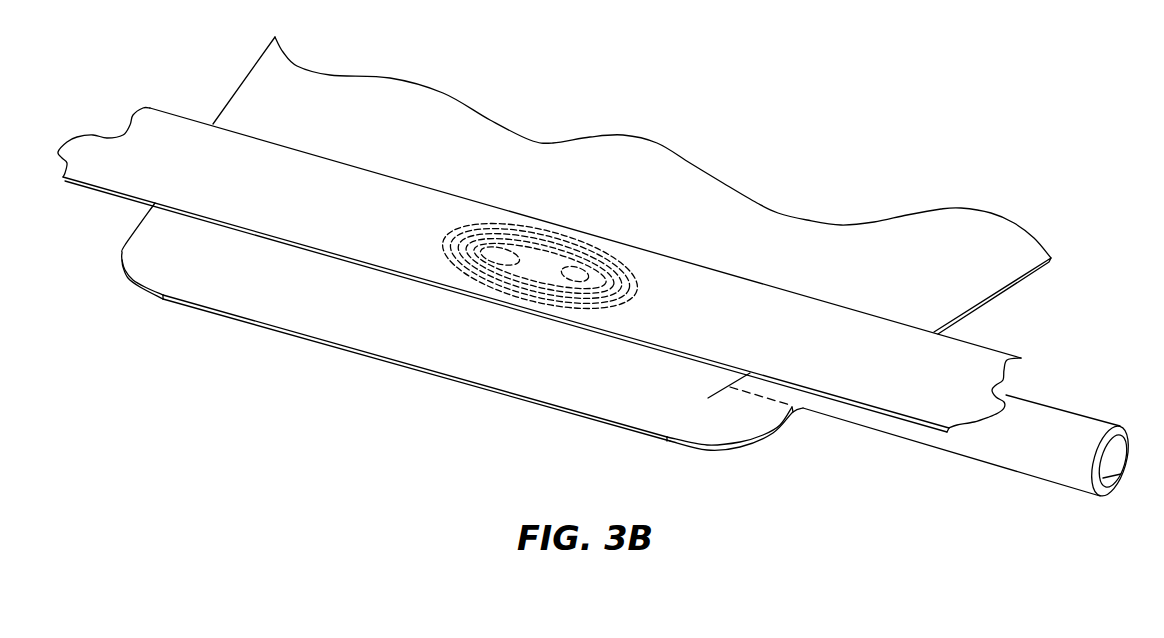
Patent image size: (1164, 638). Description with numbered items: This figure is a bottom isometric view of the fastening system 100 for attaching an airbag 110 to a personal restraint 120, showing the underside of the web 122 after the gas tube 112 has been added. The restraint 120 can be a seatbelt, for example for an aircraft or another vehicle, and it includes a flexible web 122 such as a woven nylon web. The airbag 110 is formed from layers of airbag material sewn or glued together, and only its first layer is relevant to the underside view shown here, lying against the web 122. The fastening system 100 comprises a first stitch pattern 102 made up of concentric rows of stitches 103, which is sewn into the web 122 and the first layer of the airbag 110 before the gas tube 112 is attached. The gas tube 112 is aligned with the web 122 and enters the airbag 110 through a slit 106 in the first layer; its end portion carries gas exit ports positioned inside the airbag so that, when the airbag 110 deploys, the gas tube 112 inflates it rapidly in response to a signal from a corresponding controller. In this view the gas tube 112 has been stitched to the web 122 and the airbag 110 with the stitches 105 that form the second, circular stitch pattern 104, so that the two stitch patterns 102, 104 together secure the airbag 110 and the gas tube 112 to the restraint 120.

The fastening system 100 is at (900, 109).
The first stitch pattern 102 is at (520, 297).
The concentric rows of stitches 103 is at (622, 258).
The second stitch pattern 104 is at (577, 275).
The stitches 105 is at (482, 268).
The slit 106 is at (717, 395).
The airbag 110 is at (240, 318).
The gas tube 112 is at (1032, 455).
The personal restraint 120 is at (187, 92).
The flexible web 122 is at (113, 175).